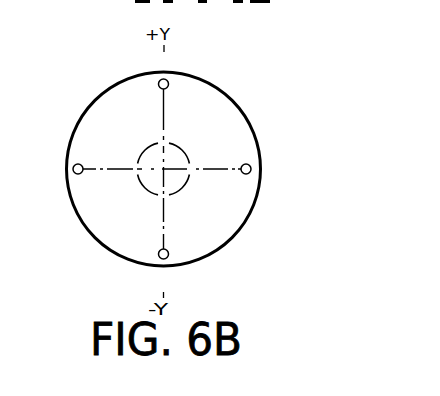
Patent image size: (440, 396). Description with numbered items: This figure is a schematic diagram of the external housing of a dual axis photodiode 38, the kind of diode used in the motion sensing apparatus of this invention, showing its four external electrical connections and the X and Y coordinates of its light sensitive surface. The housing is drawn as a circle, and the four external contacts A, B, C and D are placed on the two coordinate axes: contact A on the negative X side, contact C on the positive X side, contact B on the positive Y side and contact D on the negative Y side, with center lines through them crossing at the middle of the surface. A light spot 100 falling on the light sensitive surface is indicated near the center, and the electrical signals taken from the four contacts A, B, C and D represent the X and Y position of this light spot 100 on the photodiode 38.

The dual axis photodiode 38 is at (213, 93).
The light spot 100 is at (190, 164).
The external contact A is at (47, 167).
The external contact B is at (163, 71).
The external contact C is at (274, 169).
The external contact D is at (163, 270).